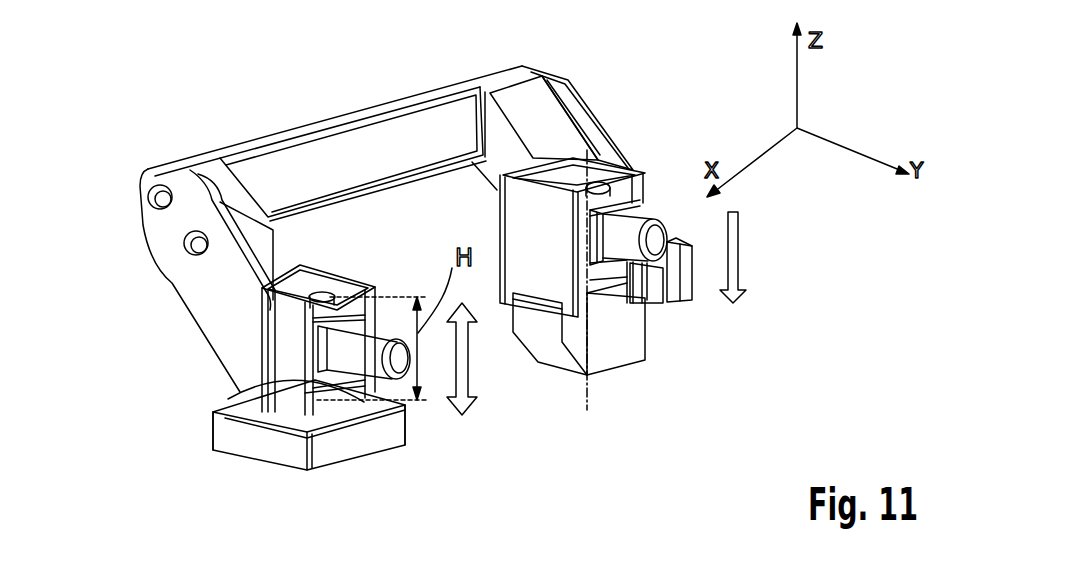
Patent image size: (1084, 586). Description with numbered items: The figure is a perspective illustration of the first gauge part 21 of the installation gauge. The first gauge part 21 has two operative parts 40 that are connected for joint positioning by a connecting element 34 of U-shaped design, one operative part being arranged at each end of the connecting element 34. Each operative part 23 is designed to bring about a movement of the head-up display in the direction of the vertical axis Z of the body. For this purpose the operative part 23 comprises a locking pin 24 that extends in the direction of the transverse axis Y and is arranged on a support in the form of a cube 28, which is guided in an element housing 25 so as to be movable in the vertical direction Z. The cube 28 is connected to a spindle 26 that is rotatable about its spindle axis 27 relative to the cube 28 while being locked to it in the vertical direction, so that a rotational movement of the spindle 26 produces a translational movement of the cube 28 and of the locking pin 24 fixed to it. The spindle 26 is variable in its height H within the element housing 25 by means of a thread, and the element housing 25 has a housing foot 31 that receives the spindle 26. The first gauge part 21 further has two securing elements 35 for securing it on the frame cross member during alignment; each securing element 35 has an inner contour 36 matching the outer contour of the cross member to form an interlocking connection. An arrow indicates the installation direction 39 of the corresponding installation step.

The first gauge part 21 is at (166, 343).
The operative part 23 is at (265, 479).
The locking pin 24 is at (372, 350).
The element housing 25 is at (287, 400).
The spindle 26 is at (262, 386).
The spindle axis 27 is at (601, 121).
The cube 28 is at (618, 198).
The housing foot 31 is at (623, 352).
The connecting element 34 is at (333, 148).
The securing element 35 is at (687, 278).
The inner contour 36 is at (662, 289).
The installation direction 39 is at (738, 252).
The operative parts 40 is at (468, 372).